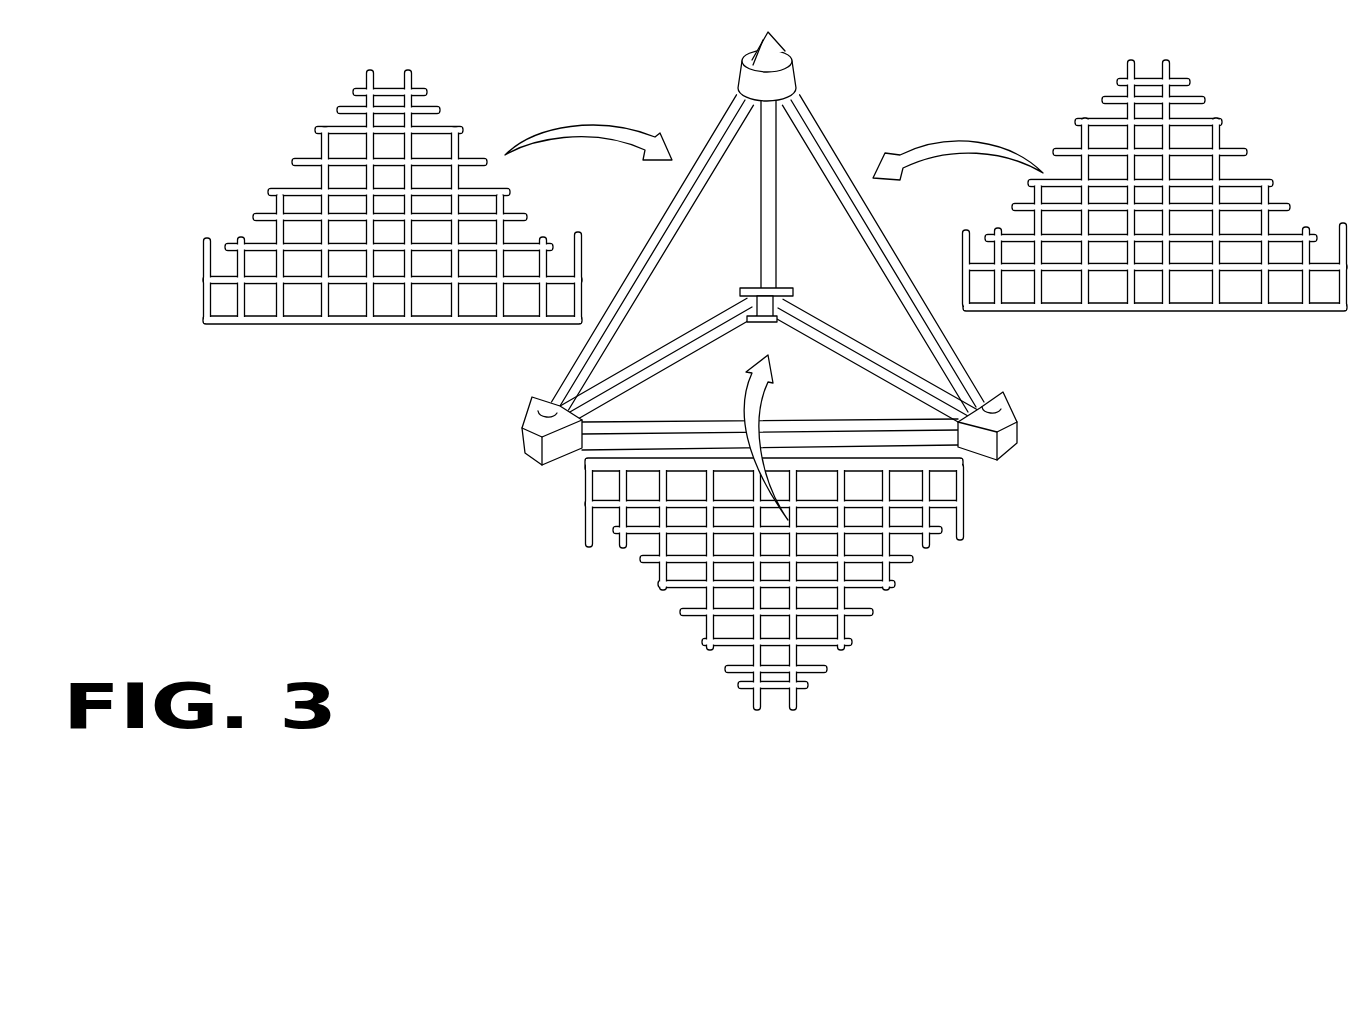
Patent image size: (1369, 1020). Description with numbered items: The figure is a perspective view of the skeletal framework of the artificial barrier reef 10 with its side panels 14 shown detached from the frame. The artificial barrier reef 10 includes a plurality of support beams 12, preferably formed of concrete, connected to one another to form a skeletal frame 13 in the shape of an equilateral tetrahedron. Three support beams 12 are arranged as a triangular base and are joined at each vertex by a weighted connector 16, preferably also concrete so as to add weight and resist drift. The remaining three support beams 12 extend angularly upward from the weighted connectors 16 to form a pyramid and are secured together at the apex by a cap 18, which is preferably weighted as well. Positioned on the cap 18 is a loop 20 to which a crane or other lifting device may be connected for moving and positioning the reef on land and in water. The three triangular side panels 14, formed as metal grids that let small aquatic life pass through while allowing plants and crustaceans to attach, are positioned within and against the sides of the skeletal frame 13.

The artificial barrier reef 10 is at (1036, 71).
The support beam 12 is at (810, 313).
The skeletal frame 13 is at (545, 359).
The side panel 14 is at (382, 316).
The weighted connector 16 is at (752, 288).
The cap 18 is at (747, 70).
The loop 20 is at (766, 31).